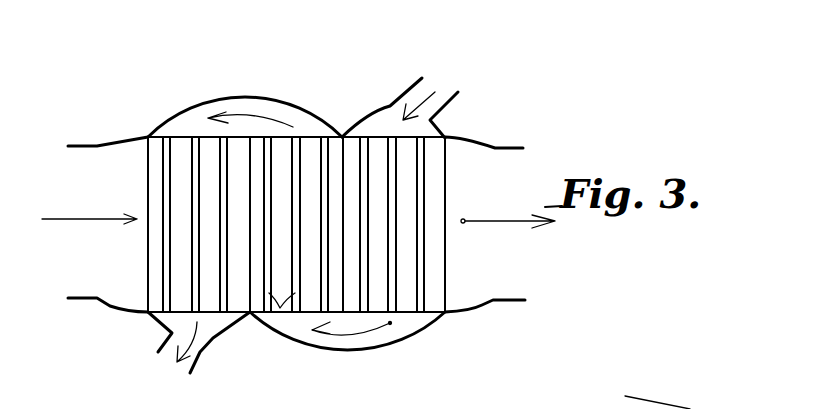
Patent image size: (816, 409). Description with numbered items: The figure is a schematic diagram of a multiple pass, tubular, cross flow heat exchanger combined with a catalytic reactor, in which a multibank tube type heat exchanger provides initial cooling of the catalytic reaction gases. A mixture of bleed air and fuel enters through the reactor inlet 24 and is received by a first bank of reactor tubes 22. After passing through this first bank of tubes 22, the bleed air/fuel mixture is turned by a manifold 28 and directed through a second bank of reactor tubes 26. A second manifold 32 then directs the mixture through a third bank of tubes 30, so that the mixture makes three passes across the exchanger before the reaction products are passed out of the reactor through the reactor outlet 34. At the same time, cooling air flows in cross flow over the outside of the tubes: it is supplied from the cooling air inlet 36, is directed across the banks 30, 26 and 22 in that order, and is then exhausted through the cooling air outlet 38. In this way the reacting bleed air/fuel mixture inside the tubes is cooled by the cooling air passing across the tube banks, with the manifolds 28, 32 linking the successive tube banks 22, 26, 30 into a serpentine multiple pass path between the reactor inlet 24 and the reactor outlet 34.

The first bank of reactor tubes 22 is at (422, 200).
The reactor inlet 24 is at (456, 100).
The second bank of reactor tubes 26 is at (280, 312).
The manifold 28 is at (367, 350).
The third bank of tubes 30 is at (193, 148).
The manifold 32 is at (270, 96).
The reactor outlet 34 is at (200, 355).
The cooling air inlet 36 is at (110, 310).
The cooling air outlet 38 is at (480, 297).